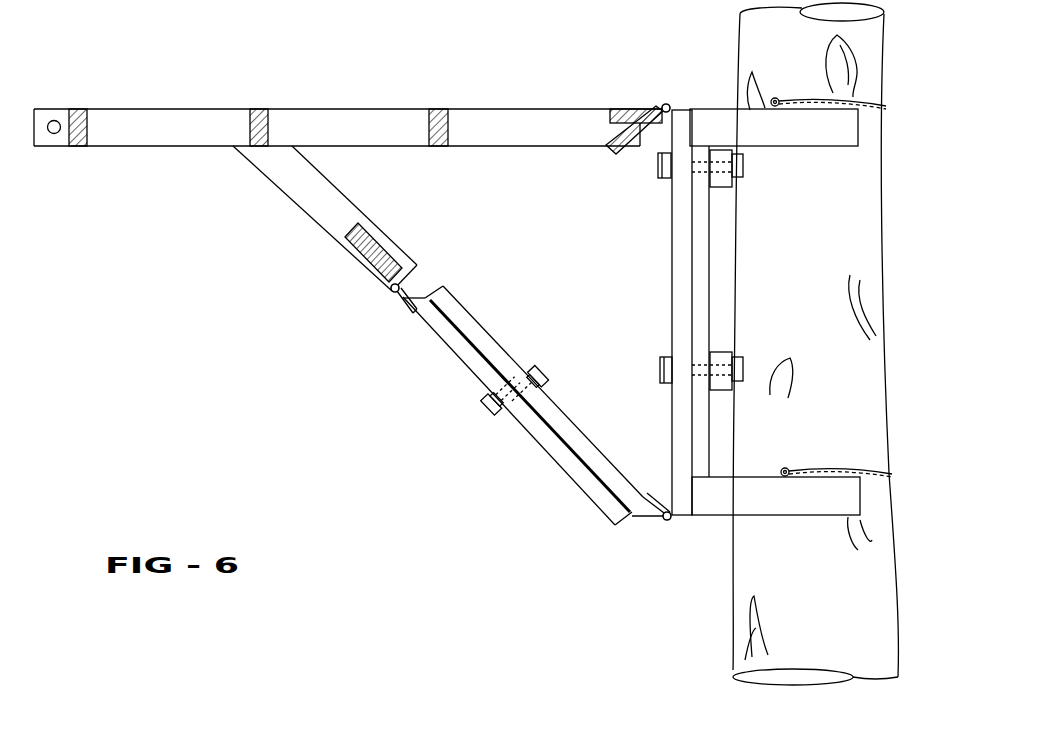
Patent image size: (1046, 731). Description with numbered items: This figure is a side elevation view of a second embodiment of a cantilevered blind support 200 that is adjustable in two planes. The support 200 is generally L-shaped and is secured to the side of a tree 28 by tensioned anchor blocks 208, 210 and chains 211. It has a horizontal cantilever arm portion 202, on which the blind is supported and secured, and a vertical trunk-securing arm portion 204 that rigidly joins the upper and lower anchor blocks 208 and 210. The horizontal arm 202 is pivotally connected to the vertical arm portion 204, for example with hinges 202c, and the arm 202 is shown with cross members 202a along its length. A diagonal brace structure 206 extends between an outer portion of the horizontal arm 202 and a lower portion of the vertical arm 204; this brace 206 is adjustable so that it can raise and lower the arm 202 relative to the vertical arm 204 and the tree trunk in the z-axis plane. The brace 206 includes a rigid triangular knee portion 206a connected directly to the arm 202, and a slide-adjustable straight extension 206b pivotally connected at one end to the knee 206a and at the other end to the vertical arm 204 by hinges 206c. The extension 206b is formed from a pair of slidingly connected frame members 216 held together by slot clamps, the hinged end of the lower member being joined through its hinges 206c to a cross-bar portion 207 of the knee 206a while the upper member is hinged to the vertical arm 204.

The cantilevered blind support 200 is at (195, 393).
The horizontal cantilever arm portion 202 is at (48, 88).
The platform cross members 202a is at (81, 136).
The hinges 202c is at (668, 104).
The vertical trunk-securing arm portion 204 is at (653, 147).
The diagonal brace structure 206 is at (183, 190).
The rigid triangular knee portion 206a is at (368, 300).
The slide-adjustable straight extension 206b is at (368, 322).
The hinges 206c is at (402, 288).
The cross-bar portion 207 is at (367, 232).
The anchor block 208 is at (798, 133).
The anchor block 210 is at (753, 498).
The chains 211 is at (773, 100).
The slidingly connected members 216 is at (480, 340).
The tree 28 is at (793, 336).